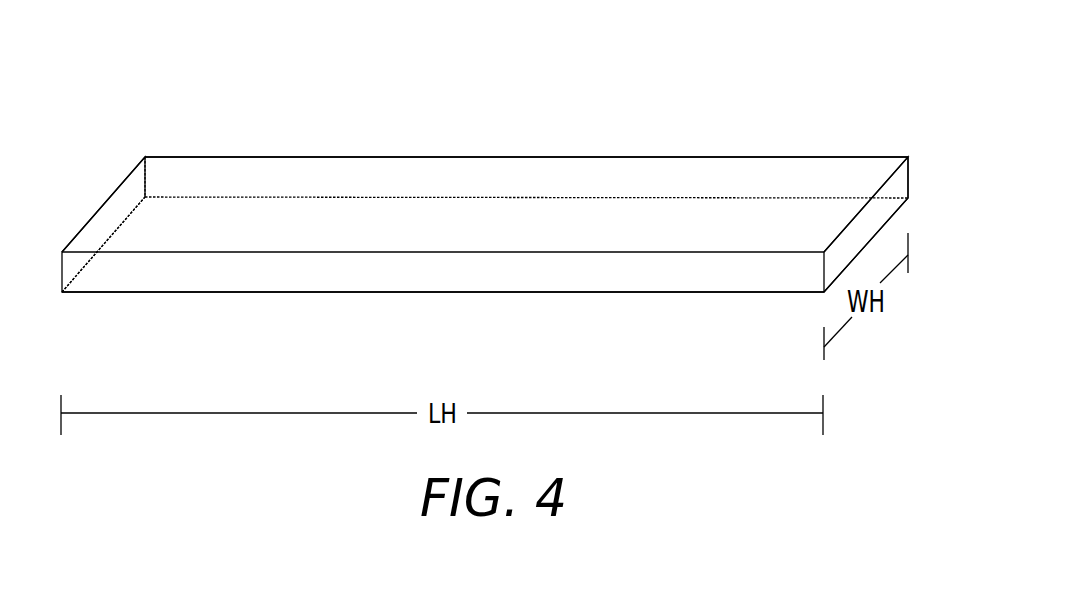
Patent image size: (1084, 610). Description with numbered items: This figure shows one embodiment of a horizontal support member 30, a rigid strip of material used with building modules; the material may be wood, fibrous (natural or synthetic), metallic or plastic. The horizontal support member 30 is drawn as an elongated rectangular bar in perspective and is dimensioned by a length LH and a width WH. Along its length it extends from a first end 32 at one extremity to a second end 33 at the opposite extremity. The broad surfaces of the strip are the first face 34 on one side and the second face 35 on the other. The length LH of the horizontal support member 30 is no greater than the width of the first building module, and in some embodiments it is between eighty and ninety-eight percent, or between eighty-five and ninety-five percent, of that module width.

The horizontal support member 30 is at (737, 92).
The first end 32 is at (895, 182).
The second end 33 is at (113, 210).
The first face 34 is at (372, 168).
The second face 35 is at (500, 283).